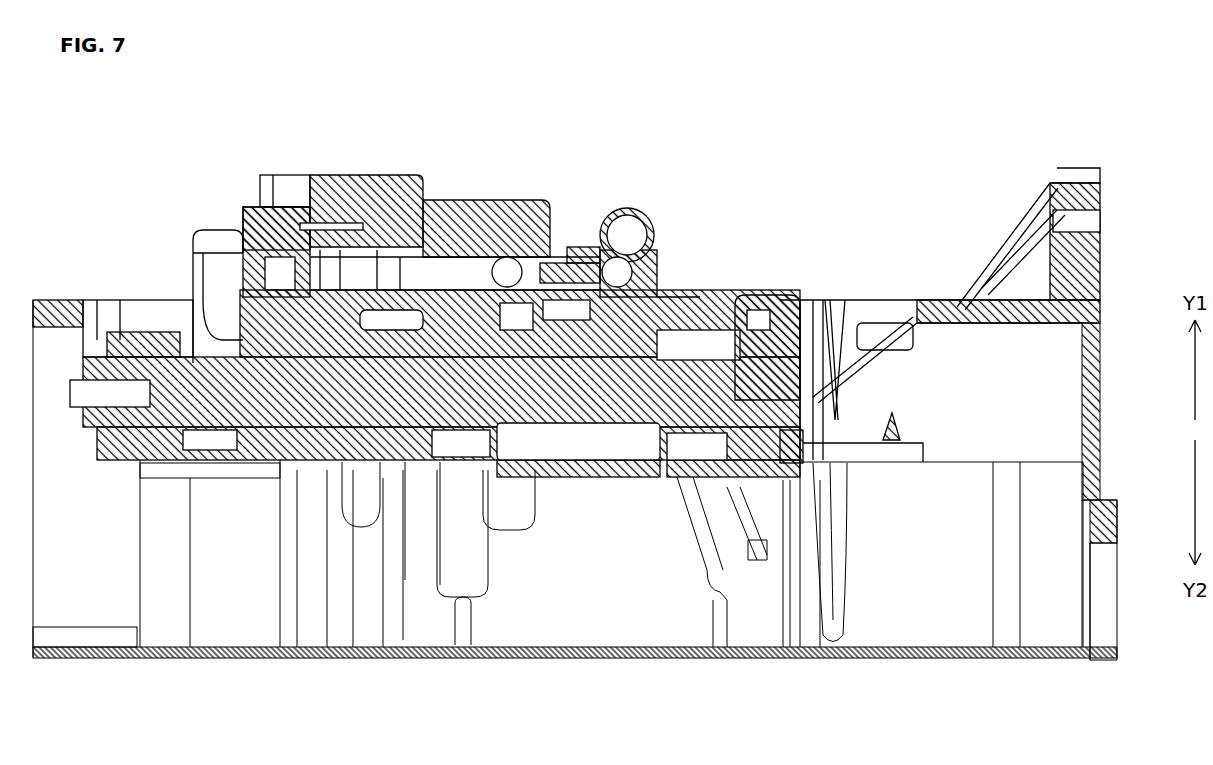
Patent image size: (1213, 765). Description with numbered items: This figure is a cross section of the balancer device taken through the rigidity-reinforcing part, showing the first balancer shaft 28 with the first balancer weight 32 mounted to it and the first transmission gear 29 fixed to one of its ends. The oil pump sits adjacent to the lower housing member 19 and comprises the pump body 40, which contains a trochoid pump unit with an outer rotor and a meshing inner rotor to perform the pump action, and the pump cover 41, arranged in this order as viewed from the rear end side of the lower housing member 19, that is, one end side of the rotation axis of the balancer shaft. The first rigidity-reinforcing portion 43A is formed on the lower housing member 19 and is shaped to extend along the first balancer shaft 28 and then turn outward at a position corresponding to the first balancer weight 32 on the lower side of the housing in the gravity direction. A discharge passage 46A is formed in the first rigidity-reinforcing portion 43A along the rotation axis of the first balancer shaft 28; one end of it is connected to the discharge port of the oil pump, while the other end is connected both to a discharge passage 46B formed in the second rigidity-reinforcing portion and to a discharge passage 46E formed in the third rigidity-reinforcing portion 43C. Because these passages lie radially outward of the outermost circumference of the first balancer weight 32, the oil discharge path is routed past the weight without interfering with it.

The first balancer shaft 28 is at (318, 407).
The first balancer weight 32 is at (585, 343).
The first transmission gear 29 is at (772, 323).
The pump body 40 is at (288, 223).
The pump cover 41 is at (355, 200).
The first rigidity-reinforcing portion 43A is at (490, 223).
The third rigidity-reinforcing portion 43C is at (583, 247).
The discharge passage 46A is at (440, 267).
The discharge passage 46B is at (512, 267).
The discharge passage 46E is at (560, 267).
The lower housing member 19 is at (670, 297).